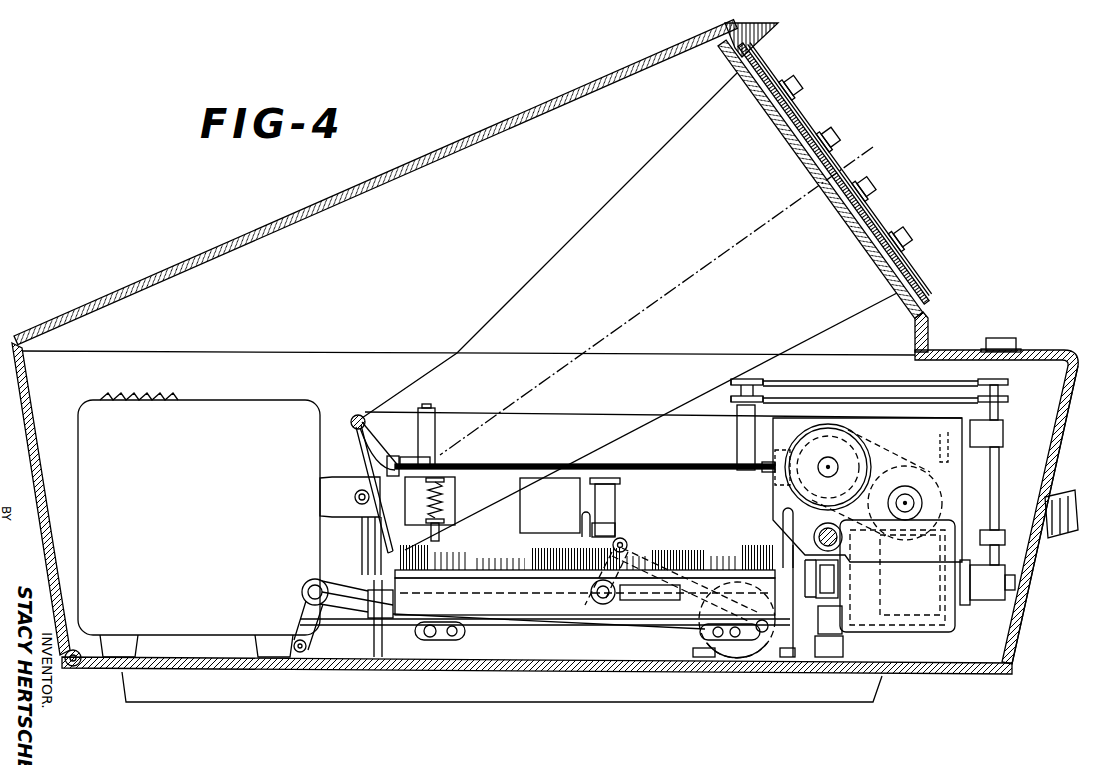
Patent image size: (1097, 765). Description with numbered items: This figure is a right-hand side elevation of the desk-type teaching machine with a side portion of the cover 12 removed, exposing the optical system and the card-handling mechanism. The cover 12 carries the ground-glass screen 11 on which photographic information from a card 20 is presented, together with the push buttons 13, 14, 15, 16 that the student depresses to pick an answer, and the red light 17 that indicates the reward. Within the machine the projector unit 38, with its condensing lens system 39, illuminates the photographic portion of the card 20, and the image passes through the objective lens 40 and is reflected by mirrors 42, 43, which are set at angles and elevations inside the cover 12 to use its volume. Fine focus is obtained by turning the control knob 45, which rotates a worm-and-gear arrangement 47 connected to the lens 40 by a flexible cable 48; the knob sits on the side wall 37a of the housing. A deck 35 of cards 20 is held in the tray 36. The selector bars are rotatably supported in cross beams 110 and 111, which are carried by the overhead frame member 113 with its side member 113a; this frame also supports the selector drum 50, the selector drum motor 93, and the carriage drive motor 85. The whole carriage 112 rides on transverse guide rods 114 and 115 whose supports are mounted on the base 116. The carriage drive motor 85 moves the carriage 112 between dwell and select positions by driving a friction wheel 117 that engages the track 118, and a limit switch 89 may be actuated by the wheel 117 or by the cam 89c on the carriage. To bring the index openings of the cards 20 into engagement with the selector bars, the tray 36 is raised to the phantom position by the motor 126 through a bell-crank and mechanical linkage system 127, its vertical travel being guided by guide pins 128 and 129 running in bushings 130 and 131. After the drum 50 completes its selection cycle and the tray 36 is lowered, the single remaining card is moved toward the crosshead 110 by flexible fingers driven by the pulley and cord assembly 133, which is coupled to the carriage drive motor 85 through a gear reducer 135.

The screen 11 is at (760, 70).
The cover 12 is at (735, 22).
The push button 13 is at (805, 86).
The push button 14 is at (845, 136).
The push button 15 is at (870, 190).
The push button 16 is at (906, 236).
The red light 17 is at (1001, 342).
The card 20 is at (372, 472).
The deck 35 is at (678, 530).
The tray 36 is at (513, 607).
The side wall 37a is at (1014, 641).
The projector unit 38 is at (262, 534).
The condensing lens system 39 is at (378, 490).
The objective lens 40 is at (445, 524).
The mirror 42 is at (555, 521).
The mirror 43 is at (352, 421).
The control knob 45 is at (1062, 540).
The worm-and-gear arrangement 47 is at (445, 498).
The flexible cable 48 is at (440, 542).
The selector drum 50 is at (866, 448).
The carriage drive motor 85 is at (917, 584).
The limit switch 89 is at (830, 636).
The cam 89c is at (833, 600).
The selector drum motor 93 is at (928, 462).
The cross beam 110 is at (412, 455).
The cross beam 111 is at (770, 454).
The carriage 112 is at (640, 404).
The overhead frame member 113 is at (676, 451).
The side member 113a is at (586, 419).
The guide rod 114 is at (364, 415).
The guide rod 115 is at (840, 538).
The base 116 is at (652, 696).
The friction wheel 117 is at (832, 574).
The track 118 is at (836, 604).
The motor 126 is at (745, 648).
The mechanical linkage system 127 is at (582, 645).
The guide pin 128 is at (372, 562).
The guide pin 129 is at (786, 525).
The bushing 130 is at (366, 614).
The bushing 131 is at (795, 660).
The pulley and cord assembly 133 is at (952, 388).
The gear reducer 135 is at (992, 601).